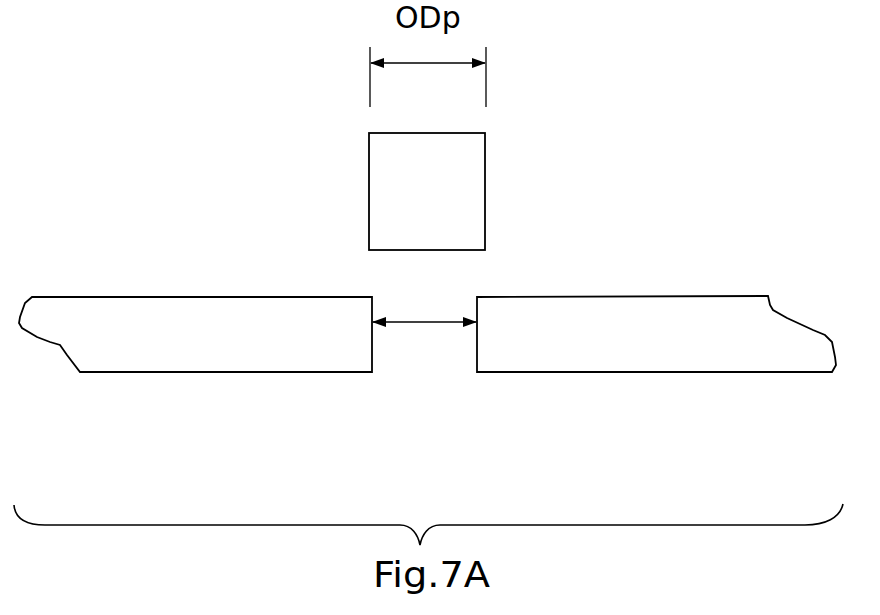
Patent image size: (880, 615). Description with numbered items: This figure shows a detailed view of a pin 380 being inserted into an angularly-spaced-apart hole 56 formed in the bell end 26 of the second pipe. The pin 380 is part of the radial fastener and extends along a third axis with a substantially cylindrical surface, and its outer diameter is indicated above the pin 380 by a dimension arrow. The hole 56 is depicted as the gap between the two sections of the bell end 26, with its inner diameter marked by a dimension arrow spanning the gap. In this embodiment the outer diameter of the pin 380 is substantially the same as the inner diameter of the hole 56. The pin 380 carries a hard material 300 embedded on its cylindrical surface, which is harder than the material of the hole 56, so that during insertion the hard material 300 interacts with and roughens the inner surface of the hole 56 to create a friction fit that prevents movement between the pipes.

The pin 380 is at (513, 130).
The hard material 300 is at (463, 213).
The bell end 26 is at (188, 283).
The angularly-spaced-apart hole 56 is at (394, 395).